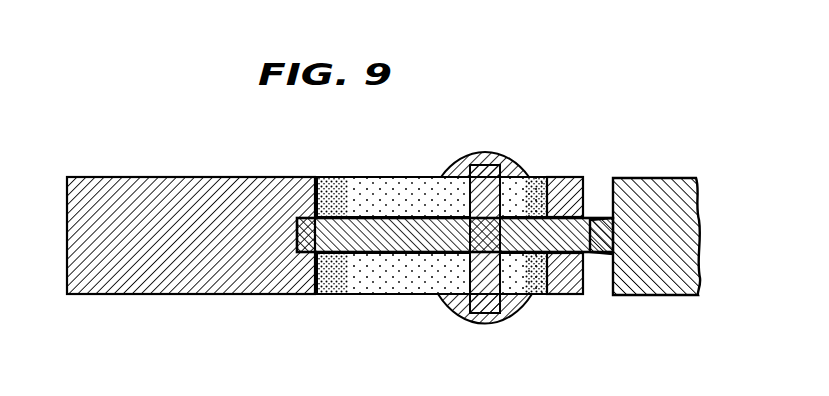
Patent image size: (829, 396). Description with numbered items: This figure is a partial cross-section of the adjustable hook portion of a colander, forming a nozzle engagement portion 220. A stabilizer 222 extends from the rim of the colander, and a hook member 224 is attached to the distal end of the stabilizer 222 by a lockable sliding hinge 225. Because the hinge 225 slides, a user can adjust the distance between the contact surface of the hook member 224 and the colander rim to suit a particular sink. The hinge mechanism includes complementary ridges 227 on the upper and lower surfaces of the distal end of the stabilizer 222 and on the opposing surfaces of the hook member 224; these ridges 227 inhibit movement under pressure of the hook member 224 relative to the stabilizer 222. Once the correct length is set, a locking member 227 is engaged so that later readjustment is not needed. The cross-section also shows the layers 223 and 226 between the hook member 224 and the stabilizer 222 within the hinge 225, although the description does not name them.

The nozzle engagement portion 220 is at (137, 305).
The stabilizer 222 is at (656, 178).
The adhesive layer 223 is at (456, 174).
The hook member 224 is at (164, 177).
The lockable sliding hinge 225 is at (520, 158).
The flexible conductor strip 226 is at (268, 295).
The complementary ridges 227 is at (526, 278).